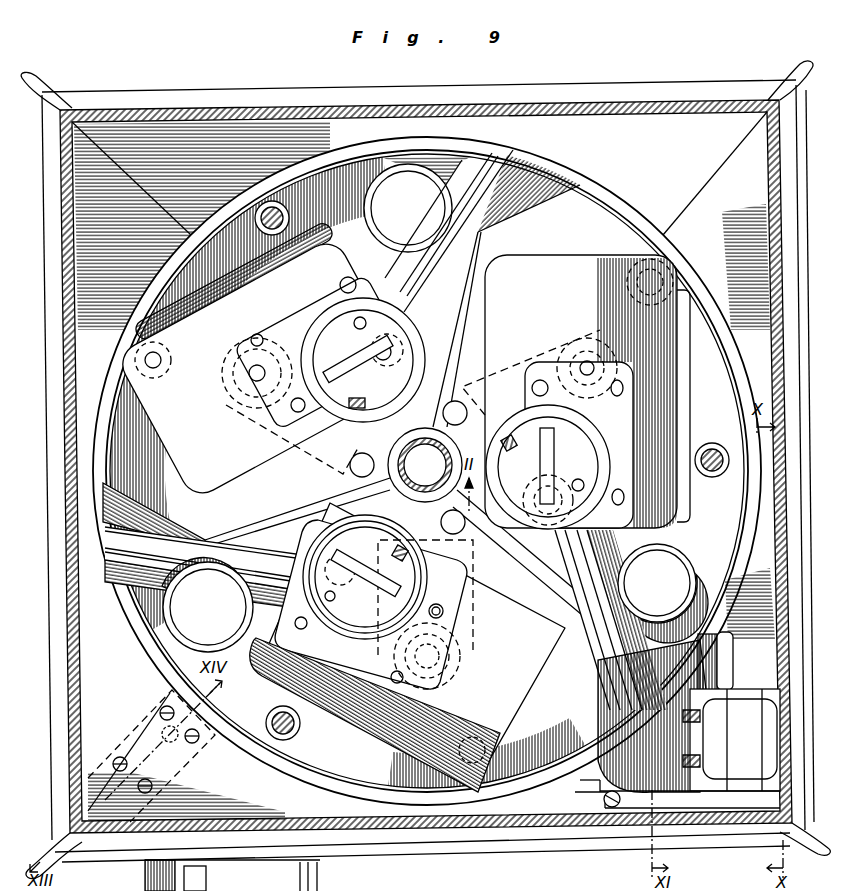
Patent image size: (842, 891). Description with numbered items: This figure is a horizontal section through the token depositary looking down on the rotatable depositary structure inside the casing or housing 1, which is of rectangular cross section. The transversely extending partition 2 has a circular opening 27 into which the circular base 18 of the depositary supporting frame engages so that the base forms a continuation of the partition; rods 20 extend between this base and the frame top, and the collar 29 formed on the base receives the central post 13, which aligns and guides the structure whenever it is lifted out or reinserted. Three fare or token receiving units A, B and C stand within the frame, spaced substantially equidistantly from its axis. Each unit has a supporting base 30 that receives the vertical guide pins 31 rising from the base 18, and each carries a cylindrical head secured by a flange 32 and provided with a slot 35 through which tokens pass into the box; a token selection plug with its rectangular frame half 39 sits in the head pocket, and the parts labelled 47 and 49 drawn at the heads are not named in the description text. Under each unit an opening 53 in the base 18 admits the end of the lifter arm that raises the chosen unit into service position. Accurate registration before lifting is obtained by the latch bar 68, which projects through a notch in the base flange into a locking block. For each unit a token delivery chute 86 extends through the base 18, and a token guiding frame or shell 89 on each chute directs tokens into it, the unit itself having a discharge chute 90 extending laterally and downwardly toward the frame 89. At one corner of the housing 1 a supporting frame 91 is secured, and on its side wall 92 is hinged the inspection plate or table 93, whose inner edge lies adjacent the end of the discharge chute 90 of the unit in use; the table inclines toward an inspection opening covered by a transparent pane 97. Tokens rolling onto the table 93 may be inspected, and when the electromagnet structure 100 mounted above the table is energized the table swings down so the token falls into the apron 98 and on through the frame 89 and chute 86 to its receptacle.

The casing or housing 1 is at (157, 828).
The transversely extending partition 2 is at (333, 805).
The post 13 is at (428, 458).
The circular base 18 is at (398, 792).
The rods 20 is at (278, 742).
The circular opening 27 is at (463, 800).
The collar 29 is at (408, 496).
The supporting base 30 is at (357, 729).
The vertical guide pins 31 is at (670, 270).
The flange 32 is at (443, 613).
The slot 35 is at (553, 482).
The rectangular frame half 39 is at (337, 616).
The pivot 47 is at (335, 597).
The needle bearing 49 is at (538, 455).
The opening 53 is at (475, 588).
The latch bar 68 is at (208, 720).
The token delivery chute 86 is at (230, 632).
The token guiding frame or shell 89 is at (160, 628).
The discharge chute 90 is at (620, 592).
The supporting frame 91 is at (585, 845).
The side wall 92 is at (723, 679).
The inspection plate or table 93 is at (600, 792).
The transparent pane 97 is at (723, 808).
The apron 98 is at (565, 750).
The electromagnet structure 100 is at (731, 740).
The fare or token receiving unit A is at (413, 641).
The fare or token receiving unit B is at (265, 360).
The fare or token receiving unit C is at (576, 392).